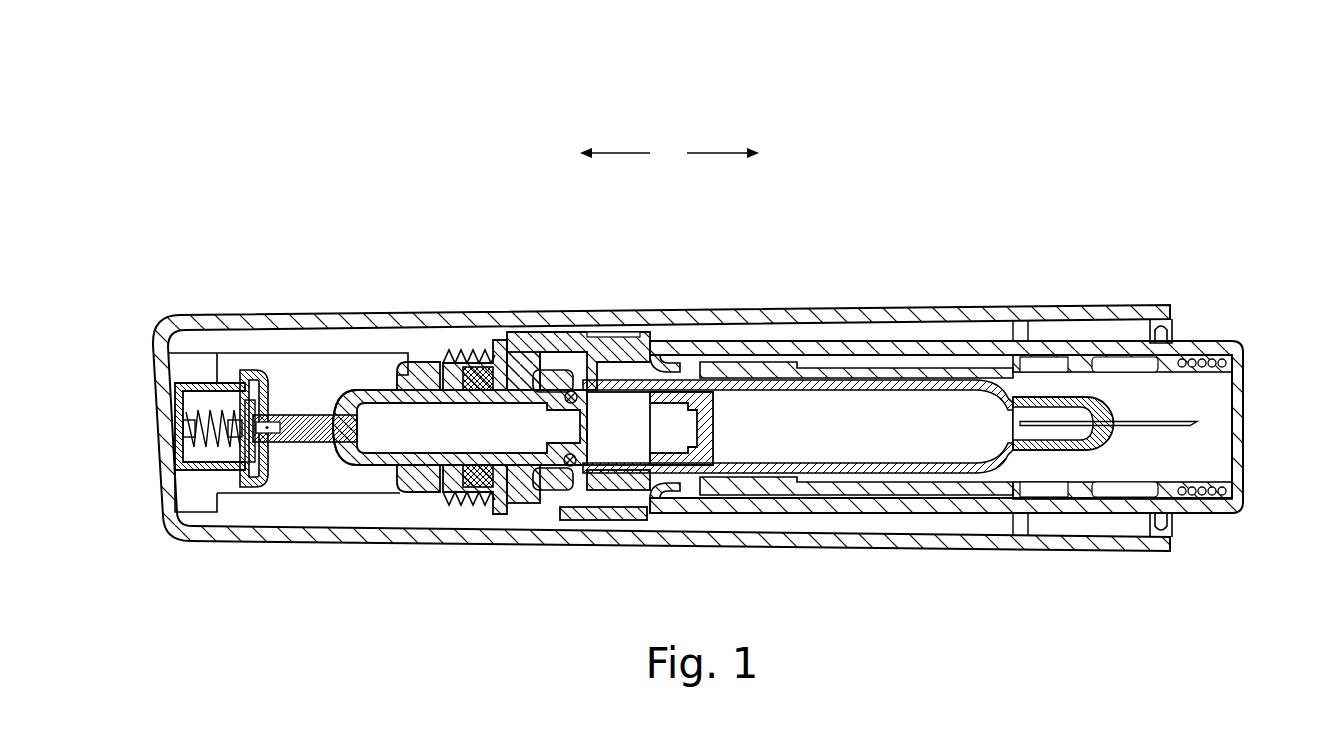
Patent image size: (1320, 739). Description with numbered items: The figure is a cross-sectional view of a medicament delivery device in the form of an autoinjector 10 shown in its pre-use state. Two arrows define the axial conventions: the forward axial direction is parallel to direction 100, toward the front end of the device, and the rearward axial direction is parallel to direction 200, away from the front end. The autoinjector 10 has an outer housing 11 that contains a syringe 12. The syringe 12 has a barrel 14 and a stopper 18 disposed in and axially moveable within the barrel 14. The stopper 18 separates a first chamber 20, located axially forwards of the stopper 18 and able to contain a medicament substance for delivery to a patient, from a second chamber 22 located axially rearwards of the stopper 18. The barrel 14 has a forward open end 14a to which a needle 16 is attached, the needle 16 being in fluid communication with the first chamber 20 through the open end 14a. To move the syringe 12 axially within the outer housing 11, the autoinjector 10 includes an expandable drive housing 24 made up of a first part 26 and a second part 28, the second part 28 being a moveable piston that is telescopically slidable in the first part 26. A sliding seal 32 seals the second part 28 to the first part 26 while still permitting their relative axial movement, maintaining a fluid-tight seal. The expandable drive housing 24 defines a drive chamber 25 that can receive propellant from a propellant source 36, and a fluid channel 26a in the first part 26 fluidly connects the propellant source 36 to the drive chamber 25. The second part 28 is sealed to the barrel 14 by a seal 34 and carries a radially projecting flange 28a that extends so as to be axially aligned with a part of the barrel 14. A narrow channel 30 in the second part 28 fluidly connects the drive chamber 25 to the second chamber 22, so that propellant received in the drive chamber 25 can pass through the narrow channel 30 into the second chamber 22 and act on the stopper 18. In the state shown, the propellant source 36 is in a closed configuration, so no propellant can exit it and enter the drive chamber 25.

The autoinjector 10 is at (1056, 213).
The outer housing 11 is at (930, 538).
The syringe 12 is at (759, 486).
The barrel 14 is at (755, 385).
The forward open end 14a is at (1113, 417).
The needle 16 is at (1178, 425).
The stopper 18 is at (640, 521).
The first chamber 20 is at (875, 423).
The second chamber 22 is at (653, 347).
The expandable drive housing 24 is at (423, 503).
The drive chamber 25 is at (458, 356).
The first part 26 is at (390, 385).
The fluid channel 26a is at (357, 402).
The second part 28 is at (443, 390).
The radially projecting flange 28a is at (527, 500).
The narrow channel 30 is at (617, 422).
The sliding seal 32 is at (490, 487).
The seal 34 is at (490, 432).
The propellant source 36 is at (205, 472).
The forward axial direction 100 is at (720, 152).
The rearward axial direction 200 is at (618, 152).